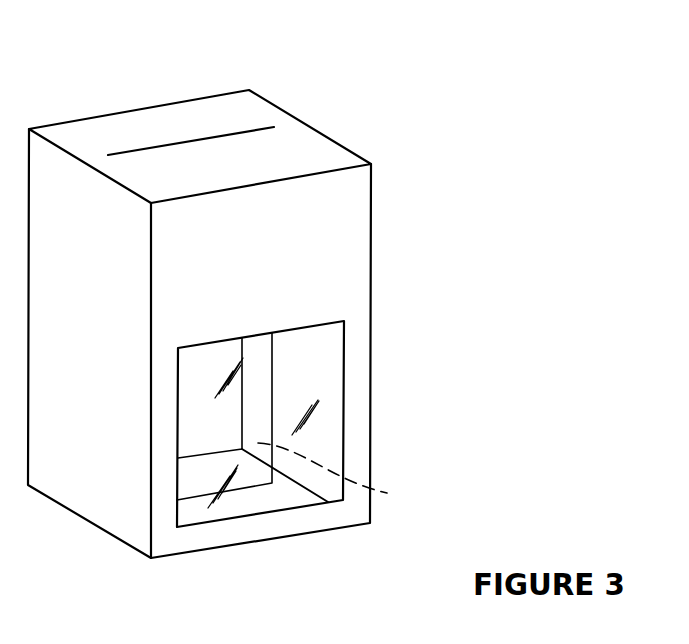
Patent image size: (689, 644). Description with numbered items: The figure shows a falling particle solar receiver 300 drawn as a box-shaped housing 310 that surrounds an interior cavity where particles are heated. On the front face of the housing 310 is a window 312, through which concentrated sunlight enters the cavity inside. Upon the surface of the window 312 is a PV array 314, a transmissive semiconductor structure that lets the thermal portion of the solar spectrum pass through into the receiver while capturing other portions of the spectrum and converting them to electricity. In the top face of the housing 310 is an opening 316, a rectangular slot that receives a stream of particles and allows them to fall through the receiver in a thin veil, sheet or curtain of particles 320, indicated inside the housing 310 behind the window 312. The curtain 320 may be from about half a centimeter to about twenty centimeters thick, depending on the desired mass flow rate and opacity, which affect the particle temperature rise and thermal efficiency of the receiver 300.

The solar receiver 300 is at (341, 61).
The housing 310 is at (348, 149).
The window 312 is at (345, 328).
The PV array 314 is at (327, 402).
The opening 316 is at (142, 147).
The curtain of particles 320 is at (353, 477).